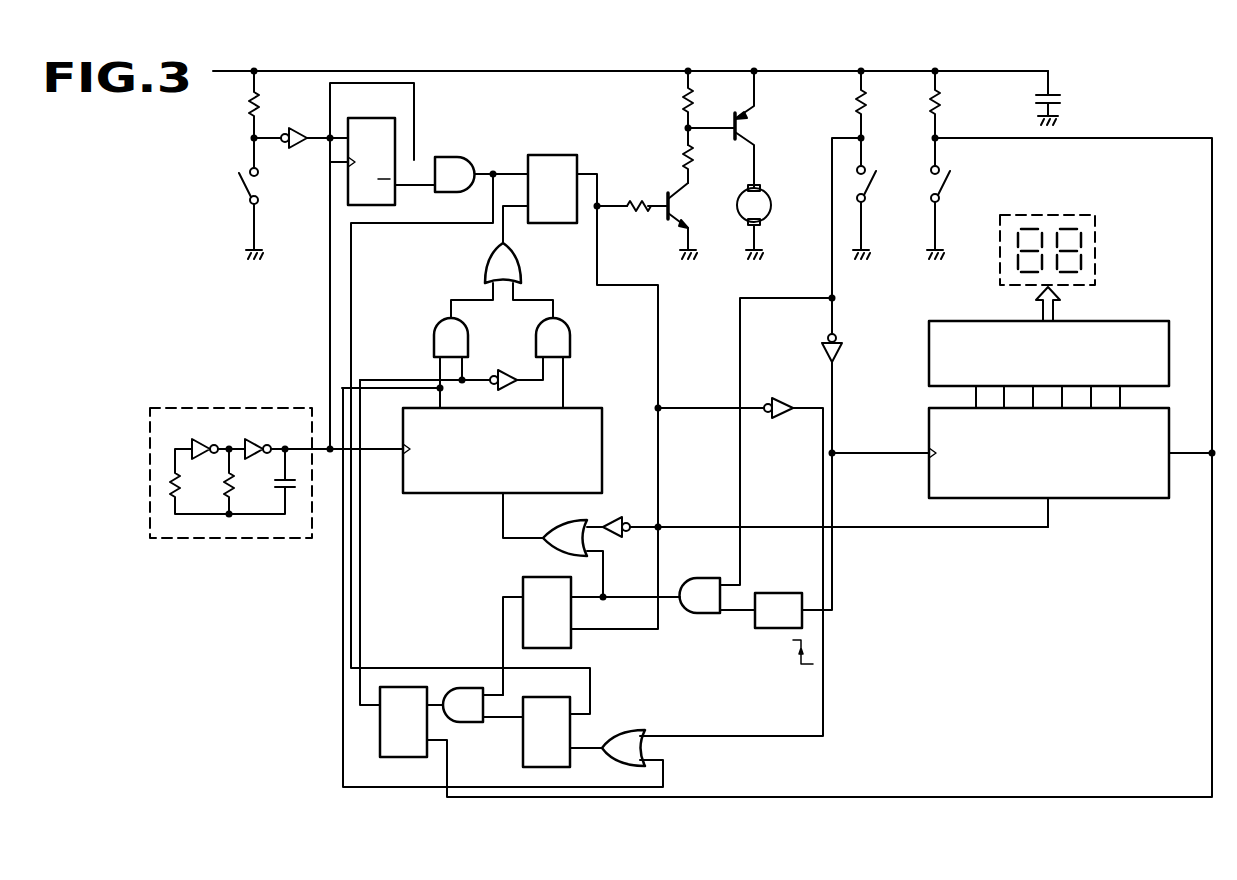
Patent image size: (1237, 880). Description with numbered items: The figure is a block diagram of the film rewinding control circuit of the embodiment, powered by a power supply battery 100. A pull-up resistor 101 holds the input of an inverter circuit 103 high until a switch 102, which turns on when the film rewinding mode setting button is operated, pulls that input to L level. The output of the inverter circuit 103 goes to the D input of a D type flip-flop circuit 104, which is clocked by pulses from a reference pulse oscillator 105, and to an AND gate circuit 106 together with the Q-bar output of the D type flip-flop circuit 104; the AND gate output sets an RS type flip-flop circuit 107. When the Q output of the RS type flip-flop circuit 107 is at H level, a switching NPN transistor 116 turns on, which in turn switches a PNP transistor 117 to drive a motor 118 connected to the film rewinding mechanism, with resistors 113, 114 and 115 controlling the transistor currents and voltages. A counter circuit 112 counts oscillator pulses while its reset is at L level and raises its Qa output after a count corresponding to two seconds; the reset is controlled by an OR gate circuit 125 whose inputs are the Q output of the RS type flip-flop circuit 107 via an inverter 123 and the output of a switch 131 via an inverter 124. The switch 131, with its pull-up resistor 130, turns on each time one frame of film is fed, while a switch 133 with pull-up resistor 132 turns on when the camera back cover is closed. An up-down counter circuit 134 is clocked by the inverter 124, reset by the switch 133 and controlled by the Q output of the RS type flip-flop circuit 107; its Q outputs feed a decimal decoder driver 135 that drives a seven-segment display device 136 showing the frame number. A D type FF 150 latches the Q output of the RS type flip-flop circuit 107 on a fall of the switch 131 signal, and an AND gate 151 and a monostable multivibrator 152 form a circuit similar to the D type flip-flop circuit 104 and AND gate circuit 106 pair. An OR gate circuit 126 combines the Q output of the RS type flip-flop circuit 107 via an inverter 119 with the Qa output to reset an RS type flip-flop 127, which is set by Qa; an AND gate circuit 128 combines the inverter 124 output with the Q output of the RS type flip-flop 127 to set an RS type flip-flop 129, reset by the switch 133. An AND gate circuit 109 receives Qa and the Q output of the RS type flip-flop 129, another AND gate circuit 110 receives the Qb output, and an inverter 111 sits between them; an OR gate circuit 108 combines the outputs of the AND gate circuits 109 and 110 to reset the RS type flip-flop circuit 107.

The power supply battery 100 is at (1084, 97).
The pull-up resistor 101 is at (248, 104).
The switch 102 is at (246, 187).
The inverter circuit 103 is at (297, 127).
The D type flip-flop circuit 104 is at (365, 118).
The reference pulse oscillator 105 is at (248, 408).
The AND gate circuit 106 is at (453, 156).
The RS type flip-flop circuit 107 is at (552, 154).
The OR gate circuit 108 is at (521, 262).
The AND gate circuit 109 is at (435, 321).
The AND gate circuit 110 is at (566, 328).
The inverter 111 is at (502, 368).
The counter circuit 112 is at (598, 408).
The resistor 113 is at (633, 201).
The resistor 114 is at (683, 102).
The resistor 115 is at (695, 156).
The switching NPN transistor 116 is at (679, 209).
The PNP transistor 117 is at (746, 127).
The motor 118 is at (772, 205).
The inverter 119 is at (784, 397).
The inverter 123 is at (616, 518).
The inverter 124 is at (844, 352).
The OR gate circuit 125 is at (560, 521).
The OR gate circuit 126 is at (622, 730).
The RS type flip-flop 127 is at (523, 744).
The AND gate circuit 128 is at (463, 722).
The RS type flip-flop 129 is at (380, 734).
The pull-up resistor 130 is at (868, 102).
The switch 131 is at (873, 189).
The pull-up resistor 132 is at (944, 102).
The switch 133 is at (954, 181).
The up-down counter circuit 134 is at (1169, 420).
The decimal decoder driver 135 is at (1128, 321).
The 7-segment display device 136 is at (1060, 215).
The D type FF 150 is at (525, 577).
The AND gate 151 is at (698, 578).
The monostable multivibrator 152 is at (778, 593).